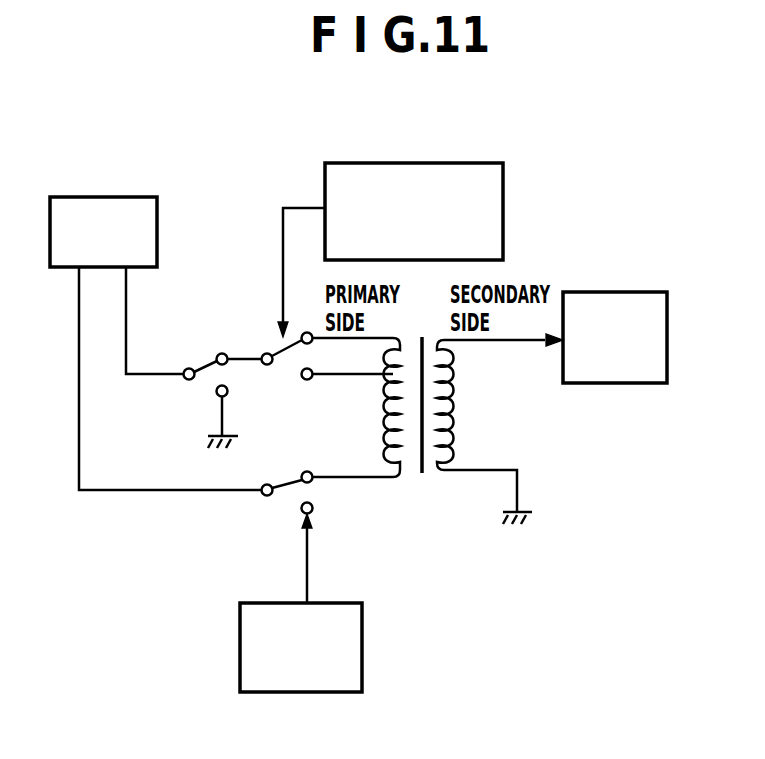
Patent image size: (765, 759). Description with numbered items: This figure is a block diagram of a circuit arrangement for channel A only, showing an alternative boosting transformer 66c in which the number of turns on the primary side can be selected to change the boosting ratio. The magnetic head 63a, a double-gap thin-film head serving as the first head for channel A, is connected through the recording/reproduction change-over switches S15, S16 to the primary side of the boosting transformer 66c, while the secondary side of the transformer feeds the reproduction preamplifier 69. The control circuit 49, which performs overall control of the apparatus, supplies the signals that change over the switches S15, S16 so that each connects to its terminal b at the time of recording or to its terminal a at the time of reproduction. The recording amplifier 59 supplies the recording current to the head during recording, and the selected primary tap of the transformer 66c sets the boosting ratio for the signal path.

The magnetic head 63a is at (127, 197).
The control circuit 49 is at (488, 163).
The reproduction preamplifier 69 is at (647, 292).
The boosting transformer 66c is at (418, 476).
The recording amplifier 59 is at (240, 640).
The recording/reproduction change-over switch S15 is at (207, 360).
The recording/reproduction change-over switch S16 is at (288, 497).